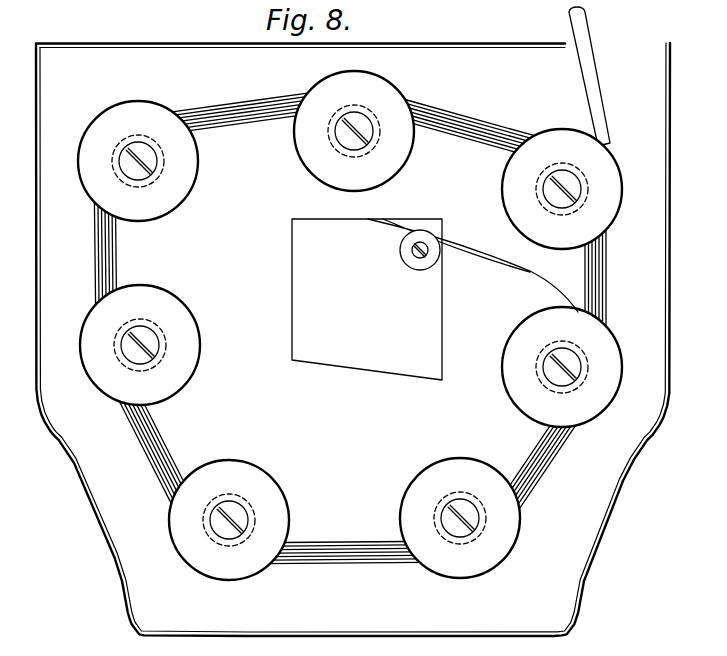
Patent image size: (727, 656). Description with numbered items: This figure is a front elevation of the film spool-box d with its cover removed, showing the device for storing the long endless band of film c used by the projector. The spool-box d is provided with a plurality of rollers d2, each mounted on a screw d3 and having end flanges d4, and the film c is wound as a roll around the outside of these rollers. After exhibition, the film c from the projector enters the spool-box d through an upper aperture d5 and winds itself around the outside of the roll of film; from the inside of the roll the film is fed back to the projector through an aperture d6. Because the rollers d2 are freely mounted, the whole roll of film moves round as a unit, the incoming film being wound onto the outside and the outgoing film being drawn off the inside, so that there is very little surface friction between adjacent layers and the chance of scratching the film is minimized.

The spool-box d is at (220, 43).
The rollers d2 is at (156, 140).
The screws d3 is at (140, 146).
The end flanges d4 is at (92, 137).
The upper aperture d5 is at (577, 28).
The aperture d6 is at (312, 307).
The film c is at (495, 118).